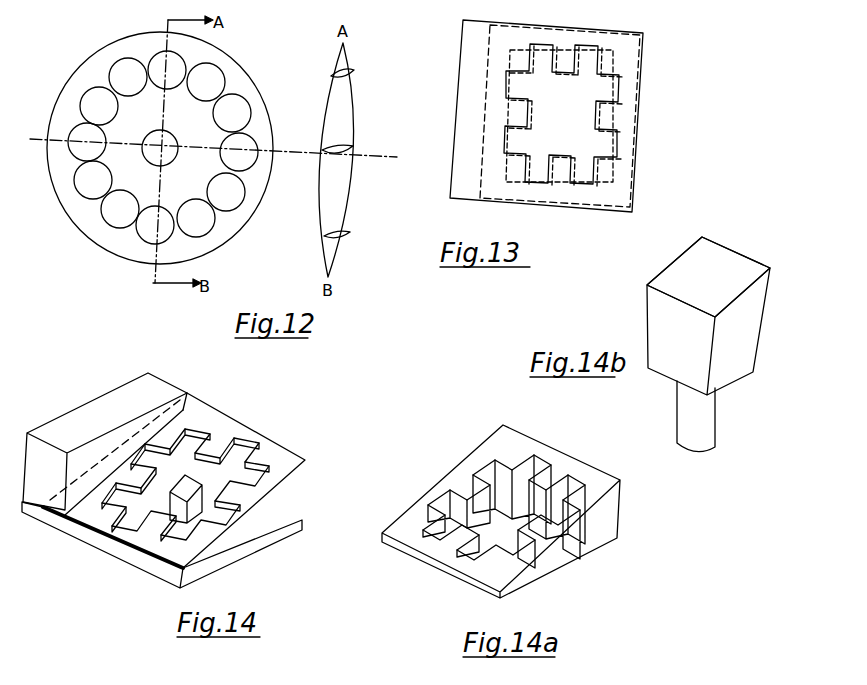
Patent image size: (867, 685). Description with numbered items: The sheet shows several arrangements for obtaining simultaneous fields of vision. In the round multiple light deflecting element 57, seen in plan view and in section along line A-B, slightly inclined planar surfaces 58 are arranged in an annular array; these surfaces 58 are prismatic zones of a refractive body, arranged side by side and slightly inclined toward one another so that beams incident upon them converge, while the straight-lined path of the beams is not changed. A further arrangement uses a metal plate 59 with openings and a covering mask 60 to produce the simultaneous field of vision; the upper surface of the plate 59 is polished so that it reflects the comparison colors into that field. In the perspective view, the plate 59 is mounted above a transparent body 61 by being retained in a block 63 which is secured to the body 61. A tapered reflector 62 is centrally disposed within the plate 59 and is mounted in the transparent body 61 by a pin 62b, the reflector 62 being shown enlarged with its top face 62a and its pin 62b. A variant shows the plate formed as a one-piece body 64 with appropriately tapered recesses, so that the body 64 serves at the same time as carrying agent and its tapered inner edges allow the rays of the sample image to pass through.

In FIG. 12, the refractive multiple light deflecting element 57 is at (332, 190).
In FIG. 12, the slightly inclined planar surfaces 58 is at (250, 147).
In FIG. 13, the metal plate 59 is at (472, 68).
In FIG. 14, the metal plate 59 is at (45, 508).
In FIG. 13, the covering mask 60 is at (620, 88).
In FIG. 14, the covering mask 60 is at (85, 513).
In FIG. 13, the transparent body 61 is at (564, 116).
In FIG. 14, the transparent body 61 is at (117, 553).
In FIG. 14B, the tapered reflector 62 is at (658, 316).
In FIG. 14, the tapered reflector 62 is at (175, 508).
In FIG. 14B, the top face of block 62a is at (729, 260).
In FIG. 14B, the pin 62b is at (680, 413).
In FIG. 14, the block 63 is at (128, 393).
In FIG. 14A, the one-piece body 64 is at (560, 557).